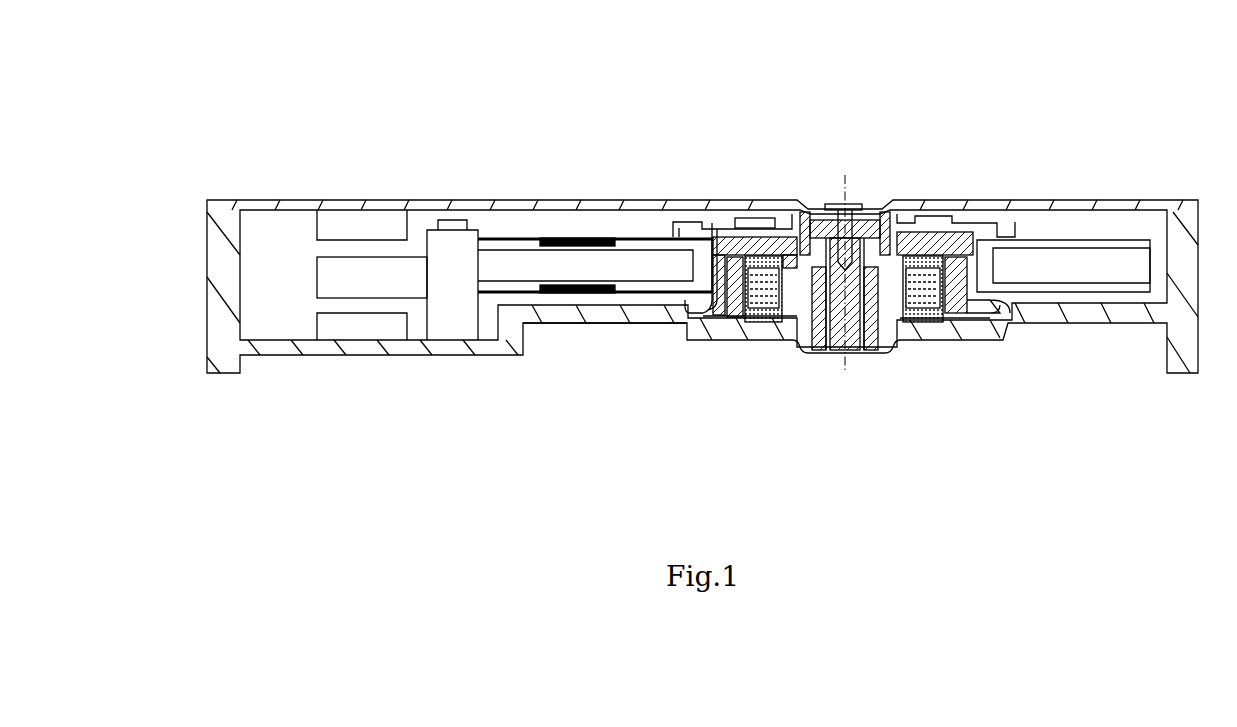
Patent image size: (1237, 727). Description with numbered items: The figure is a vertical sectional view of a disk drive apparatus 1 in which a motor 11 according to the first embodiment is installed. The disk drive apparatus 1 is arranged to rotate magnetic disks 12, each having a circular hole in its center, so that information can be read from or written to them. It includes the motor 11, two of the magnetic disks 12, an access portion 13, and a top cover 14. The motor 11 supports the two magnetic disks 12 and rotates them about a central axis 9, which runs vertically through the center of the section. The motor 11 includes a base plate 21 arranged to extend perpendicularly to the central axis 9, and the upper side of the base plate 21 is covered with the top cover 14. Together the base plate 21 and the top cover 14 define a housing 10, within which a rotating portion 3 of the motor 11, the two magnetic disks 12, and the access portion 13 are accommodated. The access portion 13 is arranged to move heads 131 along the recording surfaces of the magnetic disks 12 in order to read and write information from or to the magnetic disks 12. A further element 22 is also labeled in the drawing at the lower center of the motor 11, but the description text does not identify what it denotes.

The drive device 1 is at (386, 127).
The housing 10 is at (290, 186).
The cover 14 is at (1149, 198).
The guide rod 13 is at (595, 214).
The slot of guide rod 131 is at (606, 242).
The motor bracket 3 is at (844, 283).
The screw 9 is at (830, 186).
The guide shaft 12 is at (1062, 282).
The base 11 is at (762, 357).
The coil 21 is at (955, 334).
The rotor shaft 22 is at (846, 356).